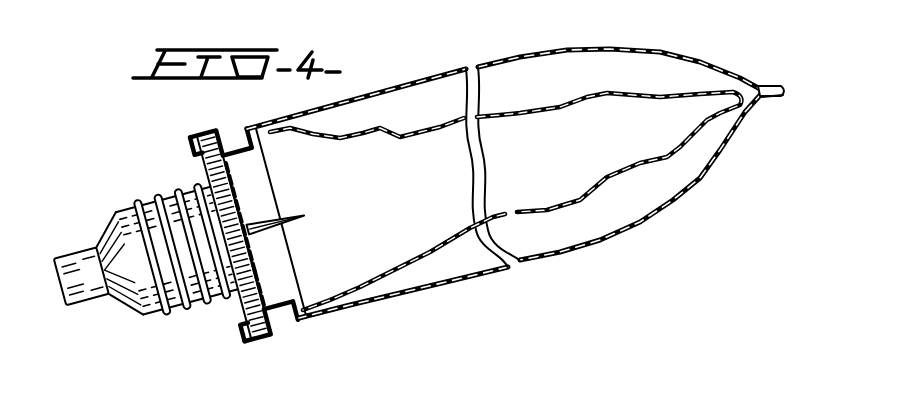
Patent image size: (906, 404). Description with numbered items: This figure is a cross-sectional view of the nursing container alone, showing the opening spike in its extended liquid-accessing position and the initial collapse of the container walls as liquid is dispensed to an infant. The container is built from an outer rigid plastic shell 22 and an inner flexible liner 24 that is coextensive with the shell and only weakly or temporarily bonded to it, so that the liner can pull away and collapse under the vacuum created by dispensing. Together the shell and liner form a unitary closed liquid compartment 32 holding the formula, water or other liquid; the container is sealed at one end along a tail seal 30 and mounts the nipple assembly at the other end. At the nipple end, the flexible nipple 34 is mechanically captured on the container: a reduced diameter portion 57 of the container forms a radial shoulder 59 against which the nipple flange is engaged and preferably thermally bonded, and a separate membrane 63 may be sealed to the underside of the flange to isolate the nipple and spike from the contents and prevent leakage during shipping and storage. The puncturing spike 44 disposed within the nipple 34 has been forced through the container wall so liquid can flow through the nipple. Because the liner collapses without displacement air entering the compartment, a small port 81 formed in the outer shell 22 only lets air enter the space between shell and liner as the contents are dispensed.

The outer rigid plastic shell 22 is at (519, 57).
The inner flexible liner 24 is at (539, 110).
The tail seal 30 is at (772, 86).
The liquid compartment 32 is at (567, 165).
The flexible nipple 34 is at (158, 305).
The puncturing spike 44 is at (252, 233).
The reduced diameter portion 57 is at (284, 308).
The radial shoulder 59 is at (263, 298).
The membrane 63 is at (258, 278).
The port 81 is at (780, 92).